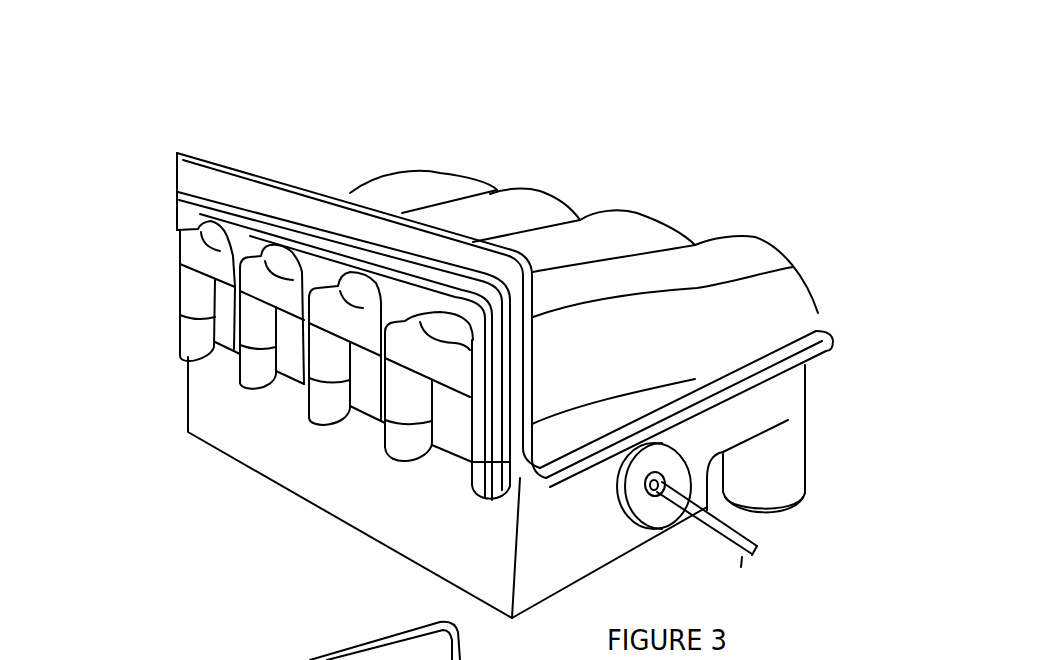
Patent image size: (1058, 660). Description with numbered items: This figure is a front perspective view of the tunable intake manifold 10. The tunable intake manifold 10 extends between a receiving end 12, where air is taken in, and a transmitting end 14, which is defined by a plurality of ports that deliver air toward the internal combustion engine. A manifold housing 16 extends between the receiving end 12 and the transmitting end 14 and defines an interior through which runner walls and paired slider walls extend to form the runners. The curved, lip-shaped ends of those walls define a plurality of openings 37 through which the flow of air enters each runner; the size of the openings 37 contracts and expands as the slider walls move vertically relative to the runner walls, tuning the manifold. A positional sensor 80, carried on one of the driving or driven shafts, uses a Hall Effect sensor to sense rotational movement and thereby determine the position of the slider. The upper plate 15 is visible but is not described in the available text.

The tunable intake manifold 10 is at (666, 178).
The receiving end 12 is at (198, 388).
The transmitting end 14 is at (792, 512).
The top plate / frame 15 is at (245, 183).
The manifold housing 16 is at (818, 315).
The openings 37 is at (358, 288).
The positional sensor 80 is at (645, 515).